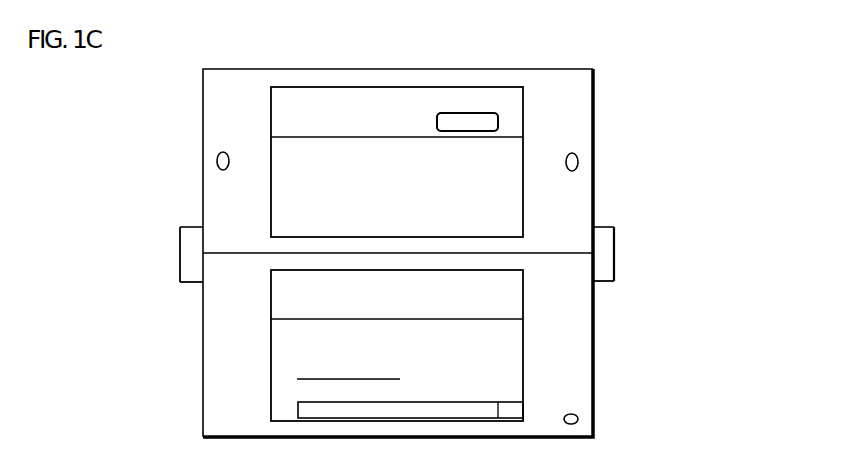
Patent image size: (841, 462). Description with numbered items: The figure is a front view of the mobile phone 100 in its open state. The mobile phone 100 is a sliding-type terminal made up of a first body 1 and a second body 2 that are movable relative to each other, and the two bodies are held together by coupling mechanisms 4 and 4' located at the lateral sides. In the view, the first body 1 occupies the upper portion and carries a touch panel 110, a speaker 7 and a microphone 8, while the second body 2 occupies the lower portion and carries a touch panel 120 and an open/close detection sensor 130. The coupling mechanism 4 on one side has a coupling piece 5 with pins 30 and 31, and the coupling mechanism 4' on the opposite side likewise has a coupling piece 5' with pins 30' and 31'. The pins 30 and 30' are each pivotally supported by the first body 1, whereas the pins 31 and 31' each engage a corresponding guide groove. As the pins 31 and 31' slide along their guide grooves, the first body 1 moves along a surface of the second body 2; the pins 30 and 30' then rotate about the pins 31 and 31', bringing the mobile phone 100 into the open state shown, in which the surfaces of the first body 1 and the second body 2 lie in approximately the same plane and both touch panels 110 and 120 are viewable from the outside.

The mobile phone 100 is at (647, 173).
The first body 1 is at (548, 83).
The second body 2 is at (581, 355).
The coupling mechanism 4 is at (641, 269).
The coupling mechanism 4' is at (153, 269).
The coupling piece 5 is at (639, 254).
The coupling piece 5' is at (157, 254).
The speaker 7 is at (217, 161).
The microphone 8 is at (578, 162).
The pin 30 is at (641, 218).
The pin 30' is at (154, 218).
The pin 31 is at (641, 277).
The pin 31' is at (153, 277).
The touch panel 110 is at (290, 93).
The touch panel 120 is at (300, 400).
The open/close detection sensor 130 is at (580, 420).